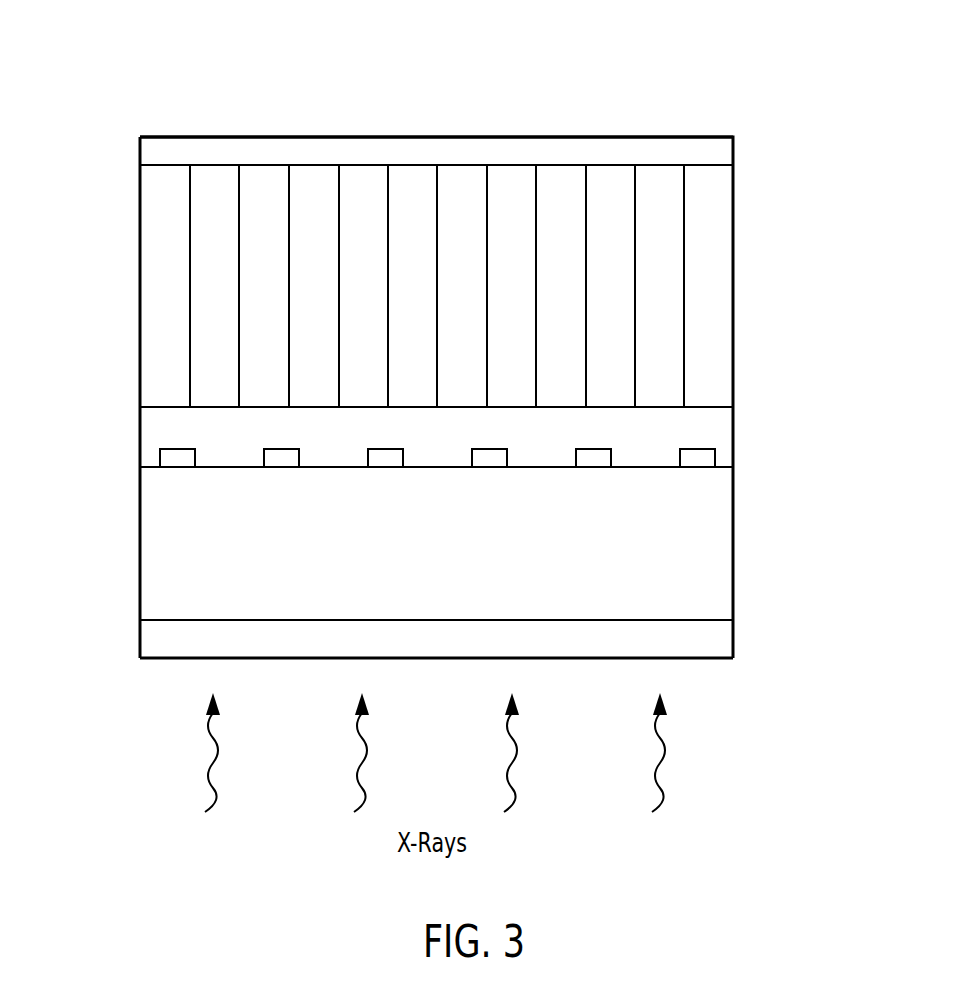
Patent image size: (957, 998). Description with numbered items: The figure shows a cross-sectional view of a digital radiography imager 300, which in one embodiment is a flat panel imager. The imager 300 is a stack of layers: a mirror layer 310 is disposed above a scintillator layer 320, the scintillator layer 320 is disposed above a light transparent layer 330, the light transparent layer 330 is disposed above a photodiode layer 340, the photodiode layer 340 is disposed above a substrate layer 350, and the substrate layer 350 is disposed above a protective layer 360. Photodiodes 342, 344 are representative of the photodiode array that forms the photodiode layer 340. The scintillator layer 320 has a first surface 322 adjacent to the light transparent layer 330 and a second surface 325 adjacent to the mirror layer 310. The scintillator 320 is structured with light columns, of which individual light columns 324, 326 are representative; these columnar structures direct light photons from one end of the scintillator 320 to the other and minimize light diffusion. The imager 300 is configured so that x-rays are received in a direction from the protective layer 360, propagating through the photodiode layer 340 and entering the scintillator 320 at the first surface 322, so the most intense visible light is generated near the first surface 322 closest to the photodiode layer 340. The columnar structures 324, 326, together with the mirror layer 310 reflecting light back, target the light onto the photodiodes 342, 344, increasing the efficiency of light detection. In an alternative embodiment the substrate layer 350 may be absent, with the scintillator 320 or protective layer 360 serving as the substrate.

The digital radiography imager 300 is at (195, 62).
The mirror layer 310 is at (715, 150).
The scintillator layer 320 is at (745, 173).
The first surface 322 is at (733, 412).
The light column 324 is at (163, 218).
The second surface 325 is at (733, 166).
The light column 326 is at (212, 288).
The light transparent layer 330 is at (710, 432).
The photodiode layer 340 is at (735, 466).
The photodiode 342 is at (177, 460).
The photodiode 344 is at (283, 469).
The substrate layer 350 is at (715, 537).
The protective layer 360 is at (715, 641).